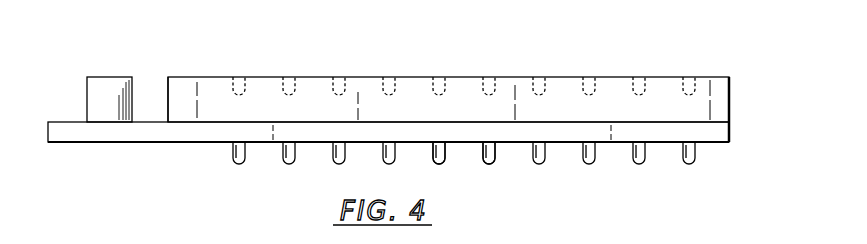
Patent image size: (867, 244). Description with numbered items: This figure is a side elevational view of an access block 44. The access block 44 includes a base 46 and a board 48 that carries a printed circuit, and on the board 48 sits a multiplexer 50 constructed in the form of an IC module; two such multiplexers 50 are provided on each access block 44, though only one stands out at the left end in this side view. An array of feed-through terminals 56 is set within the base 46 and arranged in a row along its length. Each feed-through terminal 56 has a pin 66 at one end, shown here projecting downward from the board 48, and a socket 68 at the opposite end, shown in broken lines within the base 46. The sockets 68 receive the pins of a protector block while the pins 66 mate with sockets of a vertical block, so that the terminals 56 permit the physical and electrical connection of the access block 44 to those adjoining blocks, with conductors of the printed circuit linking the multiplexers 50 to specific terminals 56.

The access block 44 is at (358, 70).
The base 46 is at (163, 88).
The board 48 is at (128, 142).
The multiplexer 50 is at (117, 77).
The feed-through terminal 56 is at (552, 160).
The pin 66 is at (484, 158).
The socket 68 is at (540, 82).